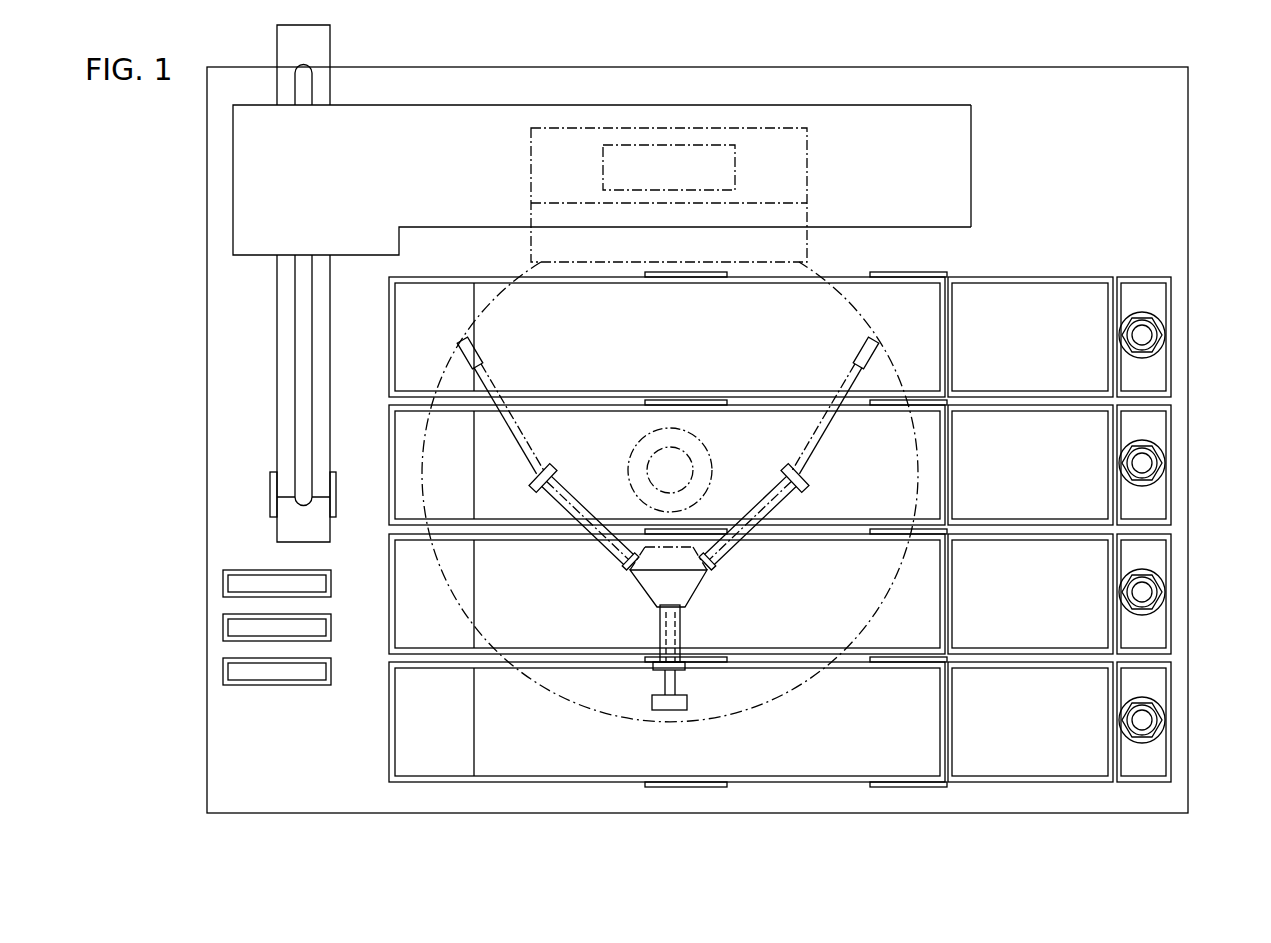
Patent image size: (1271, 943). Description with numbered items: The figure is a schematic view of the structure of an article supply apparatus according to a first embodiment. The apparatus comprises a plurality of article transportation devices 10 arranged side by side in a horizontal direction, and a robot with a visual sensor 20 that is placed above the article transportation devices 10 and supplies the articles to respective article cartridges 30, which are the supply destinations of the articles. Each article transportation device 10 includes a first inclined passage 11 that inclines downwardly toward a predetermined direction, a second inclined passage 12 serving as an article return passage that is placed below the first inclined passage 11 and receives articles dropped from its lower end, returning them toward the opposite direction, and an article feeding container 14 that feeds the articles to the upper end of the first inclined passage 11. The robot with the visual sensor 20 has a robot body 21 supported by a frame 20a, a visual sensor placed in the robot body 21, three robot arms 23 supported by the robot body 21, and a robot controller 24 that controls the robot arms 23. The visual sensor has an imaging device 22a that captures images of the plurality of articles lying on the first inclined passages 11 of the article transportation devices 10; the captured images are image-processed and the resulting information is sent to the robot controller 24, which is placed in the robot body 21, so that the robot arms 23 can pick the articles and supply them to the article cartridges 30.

The article transportation device 10 is at (1174, 300).
The first inclined passage 11 is at (906, 308).
The second inclined passage 12 is at (416, 330).
The article feeding container 14 is at (1047, 275).
The robot with a visual sensor 20 is at (552, 103).
The frame 20a is at (936, 138).
The robot body 21 is at (687, 128).
The imaging device 22a is at (712, 452).
The robot arm 23 is at (580, 490).
The robot controller 24 is at (738, 163).
The article cartridge 30 is at (284, 407).